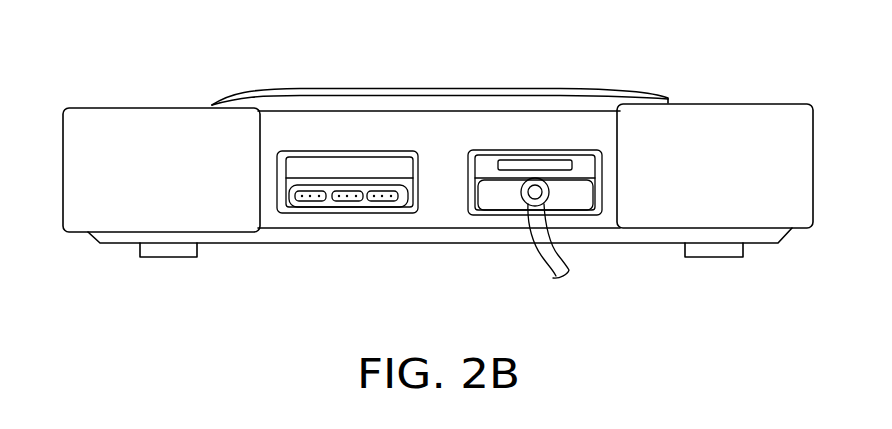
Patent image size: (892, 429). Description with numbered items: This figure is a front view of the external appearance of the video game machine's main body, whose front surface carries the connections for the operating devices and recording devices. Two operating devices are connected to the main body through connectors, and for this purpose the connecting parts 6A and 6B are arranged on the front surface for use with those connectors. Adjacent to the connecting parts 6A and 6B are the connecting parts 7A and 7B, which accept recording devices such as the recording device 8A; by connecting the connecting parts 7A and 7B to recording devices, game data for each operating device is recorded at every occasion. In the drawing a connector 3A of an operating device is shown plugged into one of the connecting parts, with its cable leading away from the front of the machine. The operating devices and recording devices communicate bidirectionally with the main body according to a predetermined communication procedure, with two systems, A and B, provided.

The connecting part 7A is at (472, 163).
The connecting part 7B is at (283, 166).
The connecting part 6A is at (464, 213).
The connecting part 6B is at (291, 214).
The recording device 8A is at (577, 152).
The controller cable plug 3A is at (601, 214).